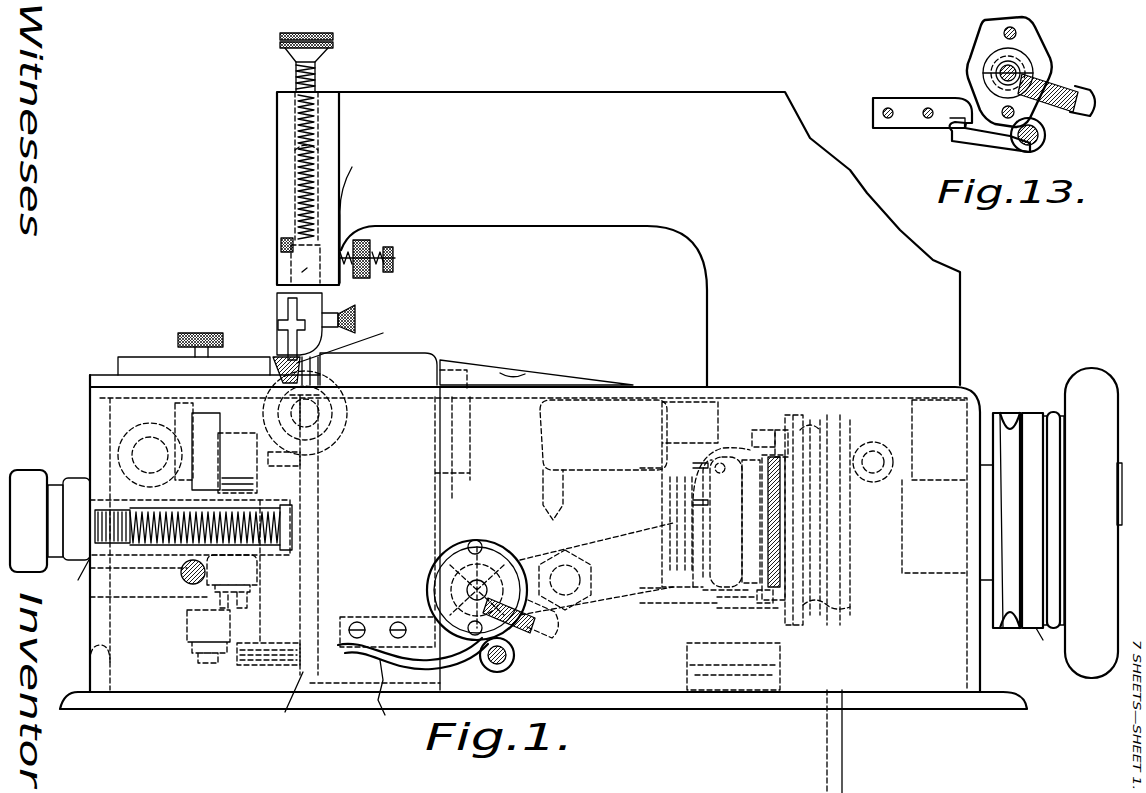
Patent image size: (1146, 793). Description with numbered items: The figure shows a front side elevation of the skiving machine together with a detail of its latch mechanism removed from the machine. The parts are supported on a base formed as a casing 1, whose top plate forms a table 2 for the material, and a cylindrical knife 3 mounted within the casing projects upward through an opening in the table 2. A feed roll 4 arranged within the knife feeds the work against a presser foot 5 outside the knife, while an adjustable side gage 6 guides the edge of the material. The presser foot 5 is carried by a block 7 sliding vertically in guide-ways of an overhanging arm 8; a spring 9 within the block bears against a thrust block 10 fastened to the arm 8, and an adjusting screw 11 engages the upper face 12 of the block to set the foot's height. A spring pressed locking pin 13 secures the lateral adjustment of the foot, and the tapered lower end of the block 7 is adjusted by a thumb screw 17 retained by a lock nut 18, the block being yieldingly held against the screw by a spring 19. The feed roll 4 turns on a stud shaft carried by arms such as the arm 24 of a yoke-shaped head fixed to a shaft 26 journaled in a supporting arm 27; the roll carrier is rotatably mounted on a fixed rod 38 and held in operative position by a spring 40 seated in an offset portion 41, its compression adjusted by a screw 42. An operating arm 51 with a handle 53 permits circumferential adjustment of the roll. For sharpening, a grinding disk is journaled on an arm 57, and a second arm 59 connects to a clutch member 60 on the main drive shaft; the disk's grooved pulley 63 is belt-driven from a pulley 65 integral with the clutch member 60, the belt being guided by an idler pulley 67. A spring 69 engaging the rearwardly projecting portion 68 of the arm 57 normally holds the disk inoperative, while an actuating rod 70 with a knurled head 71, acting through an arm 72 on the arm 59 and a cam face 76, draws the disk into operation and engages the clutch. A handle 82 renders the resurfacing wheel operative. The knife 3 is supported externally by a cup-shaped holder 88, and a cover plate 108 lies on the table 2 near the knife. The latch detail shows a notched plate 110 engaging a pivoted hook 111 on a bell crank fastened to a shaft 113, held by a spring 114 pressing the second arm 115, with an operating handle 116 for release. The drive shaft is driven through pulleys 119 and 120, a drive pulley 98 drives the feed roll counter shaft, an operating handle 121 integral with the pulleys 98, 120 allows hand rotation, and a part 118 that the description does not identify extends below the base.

In FIG. 1, the casing 1 is at (678, 397).
In FIG. 1, the table 2 is at (478, 383).
In FIG. 1, the cylindrical knife 3 is at (327, 532).
In FIG. 1, the feed roll 4 is at (338, 433).
In FIG. 1, the presser foot 5 is at (290, 328).
In FIG. 1, the adjustable side gage 6 is at (145, 356).
In FIG. 1, the block 7 is at (282, 299).
In FIG. 1, the overhanging arm 8 is at (415, 105).
In FIG. 1, the spring 9 is at (295, 201).
In FIG. 1, the thrust block 10 is at (300, 272).
In FIG. 1, the adjusting screw 11 is at (318, 78).
In FIG. 1, the upper face 12 is at (318, 152).
In FIG. 1, the spring pressed locking pin 13 is at (357, 318).
In FIG. 1, the thumb screw 17 is at (395, 262).
In FIG. 1, the lock nut 18 is at (372, 246).
In FIG. 1, the spring 19 is at (281, 243).
In FIG. 1, the arm of yoke-shaped head 24 is at (283, 460).
In FIG. 1, the shaft 26 is at (207, 410).
In FIG. 1, the supporting arm 27 is at (255, 470).
In FIG. 1, the fixed rod 38 is at (150, 448).
In FIG. 1, the spring 40 is at (277, 556).
In FIG. 1, the offset portion 41 is at (288, 546).
In FIG. 1, the screw 42 is at (68, 574).
In FIG. 1, the operating arm 51 is at (72, 485).
In FIG. 1, the handle 53 is at (22, 475).
In FIG. 1, the arm 57 is at (687, 445).
In FIG. 1, the second arm 59 is at (766, 398).
In FIG. 1, the clutch member 60 is at (753, 553).
In FIG. 1, the grooved pulley 63 is at (278, 660).
In FIG. 1, the pulley 65 is at (808, 420).
In FIG. 1, the idler pulley 67 is at (707, 663).
In FIG. 1, the rearwardly projecting portion 68 is at (855, 430).
In FIG. 1, the spring 69 is at (883, 450).
In FIG. 1, the actuating rod 70 is at (480, 588).
In FIG. 1, the knurled head 71 is at (490, 546).
In FIG. 1, the arm 72 is at (609, 546).
In FIG. 13, the cam face 76 is at (1022, 55).
In FIG. 1, the handle 82 is at (133, 595).
In FIG. 1, the cup-shaped holder 88 is at (343, 686).
In FIG. 1, the drive pulley 98 is at (1034, 646).
In FIG. 1, the cover plate 108 is at (540, 375).
In FIG. 1, the notched plate 110 is at (393, 625).
In FIG. 13, the notched plate 110 is at (916, 105).
In FIG. 1, the pivoted hook 111 is at (398, 660).
In FIG. 13, the pivoted hook 111 is at (960, 137).
In FIG. 1, the shaft 113 is at (507, 665).
In FIG. 13, the shaft 113 is at (1046, 137).
In FIG. 1, the spring 114 is at (540, 620).
In FIG. 13, the spring 114 is at (1062, 90).
In FIG. 1, the second arm 115 is at (556, 632).
In FIG. 13, the second arm 115 is at (1093, 103).
In FIG. 1, the operating handle 116 is at (386, 715).
In FIG. 1, the treadle rod 118 is at (834, 741).
In FIG. 1, the pulley 119 is at (853, 607).
In FIG. 1, the pulley 120 is at (1000, 413).
In FIG. 1, the operating handle 121 is at (1085, 372).